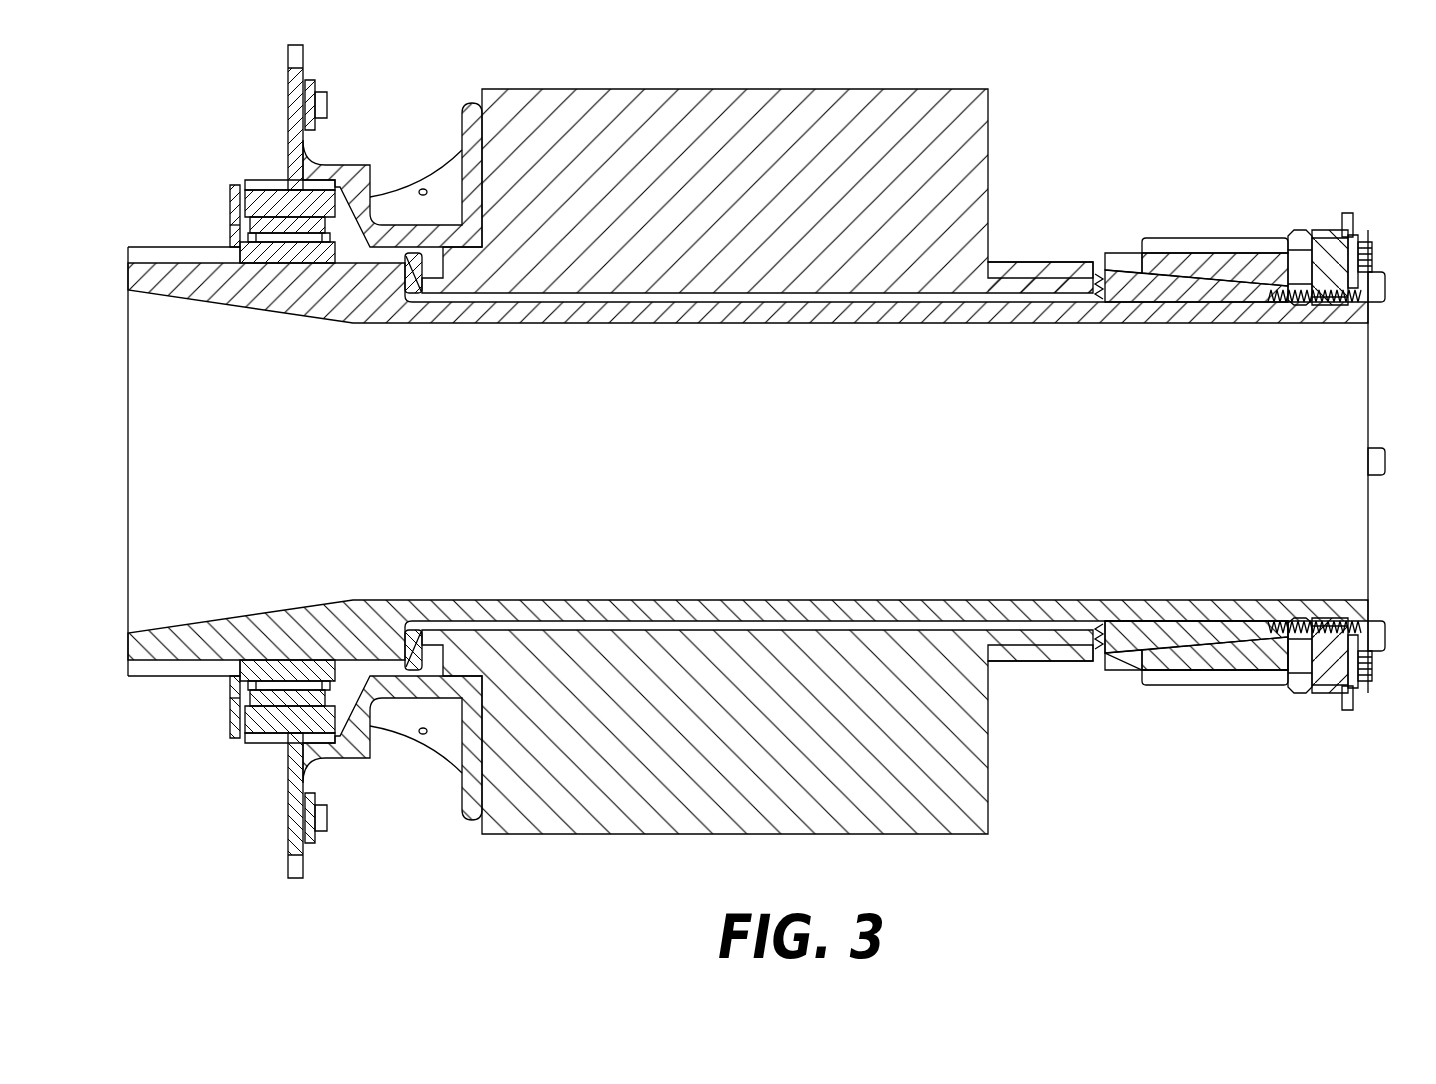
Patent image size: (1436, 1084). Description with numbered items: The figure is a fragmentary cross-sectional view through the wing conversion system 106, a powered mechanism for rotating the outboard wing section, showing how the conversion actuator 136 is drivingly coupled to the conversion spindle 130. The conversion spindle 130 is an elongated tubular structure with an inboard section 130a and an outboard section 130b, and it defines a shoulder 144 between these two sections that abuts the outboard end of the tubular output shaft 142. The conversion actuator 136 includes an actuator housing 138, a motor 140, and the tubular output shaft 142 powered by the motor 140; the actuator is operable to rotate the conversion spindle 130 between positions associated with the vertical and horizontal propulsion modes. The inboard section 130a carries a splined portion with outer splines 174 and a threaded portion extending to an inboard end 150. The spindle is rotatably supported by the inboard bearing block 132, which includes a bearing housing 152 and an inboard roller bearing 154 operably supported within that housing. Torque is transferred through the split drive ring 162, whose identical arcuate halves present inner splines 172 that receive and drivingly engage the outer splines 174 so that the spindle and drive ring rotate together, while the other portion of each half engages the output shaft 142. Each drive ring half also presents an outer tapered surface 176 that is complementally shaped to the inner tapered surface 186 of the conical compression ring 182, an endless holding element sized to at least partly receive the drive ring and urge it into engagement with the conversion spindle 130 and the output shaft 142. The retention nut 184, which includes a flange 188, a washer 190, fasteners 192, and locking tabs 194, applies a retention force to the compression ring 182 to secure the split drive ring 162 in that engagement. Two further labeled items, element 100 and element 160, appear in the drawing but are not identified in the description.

The drive assembly 100 is at (1141, 90).
The wing conversion system 106 is at (1197, 112).
The conversion spindle 130 is at (723, 293).
The inboard section 130a is at (1340, 552).
The outboard section 130b is at (153, 650).
The inboard bearing block 132 is at (289, 190).
The conversion actuator 136 is at (832, 815).
The actuator housing 138 is at (668, 815).
The motor 140 is at (873, 768).
The tubular output shaft 142 is at (1002, 265).
The shoulder 144 is at (413, 280).
The inboard end 150 is at (1368, 368).
The bearing housing 152 is at (254, 208).
The inboard roller bearing 154 is at (250, 700).
The spacer ring 160 is at (1027, 266).
The split drive ring 162 is at (1138, 645).
The inner splines 172 is at (1112, 632).
The outer splines 174 is at (1162, 627).
The outer tapered surface 176 is at (1190, 668).
The conical compression ring 182 is at (1210, 250).
The retention nut 184 is at (1332, 255).
The inner tapered surface 186 is at (1220, 622).
The flange 188 is at (1333, 663).
The washer 190 is at (1300, 680).
The fasteners 192 is at (1385, 463).
The locking tabs 194 is at (1348, 222).